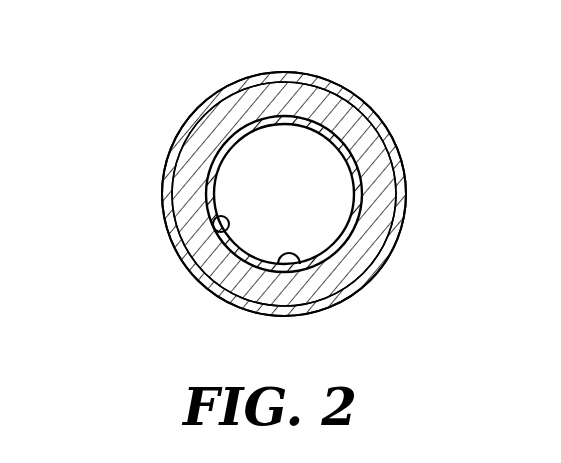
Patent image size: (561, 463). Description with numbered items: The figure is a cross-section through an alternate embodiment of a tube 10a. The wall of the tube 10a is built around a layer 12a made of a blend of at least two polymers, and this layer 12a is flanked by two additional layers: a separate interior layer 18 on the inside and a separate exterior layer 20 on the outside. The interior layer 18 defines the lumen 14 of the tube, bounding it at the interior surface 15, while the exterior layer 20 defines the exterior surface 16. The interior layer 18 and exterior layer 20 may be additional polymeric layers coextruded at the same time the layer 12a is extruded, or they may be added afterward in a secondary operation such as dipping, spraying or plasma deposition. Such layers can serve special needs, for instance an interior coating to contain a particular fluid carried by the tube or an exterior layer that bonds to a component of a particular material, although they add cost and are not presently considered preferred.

The tube 10a is at (160, 86).
The layer 12a is at (353, 130).
The lumen 14 is at (315, 197).
The interior surface 15 is at (220, 223).
The exterior surface 16 is at (356, 288).
The interior layer 18 is at (279, 257).
The exterior layer 20 is at (210, 285).